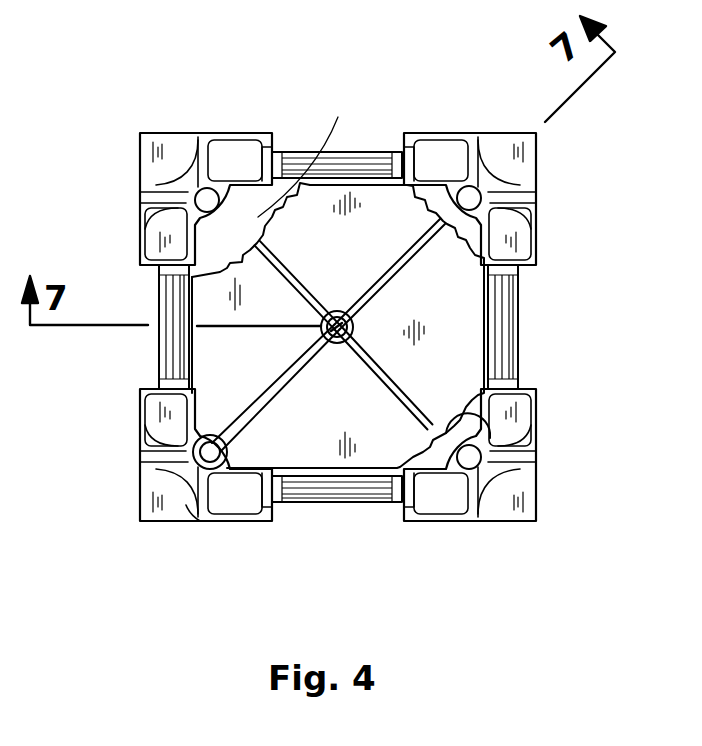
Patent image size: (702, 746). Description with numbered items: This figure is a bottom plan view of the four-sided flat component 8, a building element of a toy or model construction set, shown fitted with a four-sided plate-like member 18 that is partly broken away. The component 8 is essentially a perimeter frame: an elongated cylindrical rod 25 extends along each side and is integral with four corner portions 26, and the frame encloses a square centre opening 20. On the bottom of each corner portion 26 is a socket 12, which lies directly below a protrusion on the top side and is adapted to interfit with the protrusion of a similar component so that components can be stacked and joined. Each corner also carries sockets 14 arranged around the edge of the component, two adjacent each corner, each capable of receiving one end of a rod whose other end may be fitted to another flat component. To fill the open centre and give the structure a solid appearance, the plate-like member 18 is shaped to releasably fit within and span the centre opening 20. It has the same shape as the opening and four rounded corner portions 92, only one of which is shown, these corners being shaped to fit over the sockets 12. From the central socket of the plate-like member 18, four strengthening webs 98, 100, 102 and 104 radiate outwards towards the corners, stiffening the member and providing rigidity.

The four-sided flat component 8 is at (488, 112).
The socket 12 is at (207, 198).
The socket 14 is at (534, 214).
The four-sided plate-like member 18 is at (455, 337).
The centre opening 20 is at (312, 161).
The elongated rod 25 is at (363, 168).
The corner portion 26 is at (170, 522).
The rounded corner portion 92 is at (195, 519).
The strengthening web 98 is at (389, 284).
The strengthening web 100 is at (286, 272).
The strengthening web 102 is at (256, 412).
The strengthening web 104 is at (388, 384).